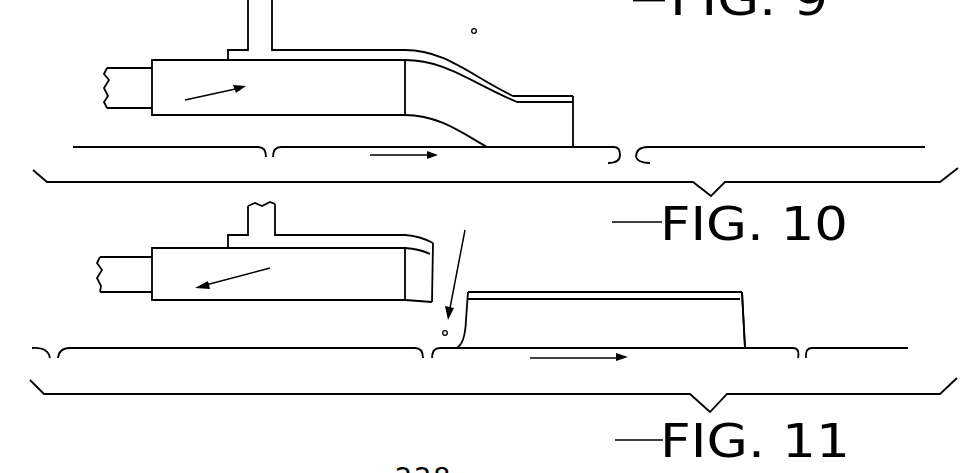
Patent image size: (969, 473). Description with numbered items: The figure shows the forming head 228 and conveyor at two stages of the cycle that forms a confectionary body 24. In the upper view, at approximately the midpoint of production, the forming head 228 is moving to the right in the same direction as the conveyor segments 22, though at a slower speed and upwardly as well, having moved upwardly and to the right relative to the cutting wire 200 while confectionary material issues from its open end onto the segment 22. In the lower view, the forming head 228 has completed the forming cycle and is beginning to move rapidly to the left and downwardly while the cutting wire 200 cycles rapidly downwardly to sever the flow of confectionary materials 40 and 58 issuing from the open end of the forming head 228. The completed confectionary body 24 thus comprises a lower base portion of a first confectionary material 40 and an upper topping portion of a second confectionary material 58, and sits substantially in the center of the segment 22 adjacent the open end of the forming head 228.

In FIG. 10, the conveyor segment 22 is at (608, 163).
In FIG. 11, the conveyor segment 22 is at (447, 352).
In FIG. 10, the confectionary body 24 is at (555, 127).
In FIG. 11, the confectionary body 24 is at (728, 323).
In FIG. 11, the first confectionary material 40 is at (608, 334).
In FIG. 11, the second confectionary material 58 is at (557, 297).
In FIG. 10, the cutting wire 200 is at (478, 31).
In FIG. 11, the cutting wire 200 is at (442, 333).
In FIG. 10, the forming head 228 is at (314, 82).
In FIG. 11, the forming head 228 is at (308, 278).